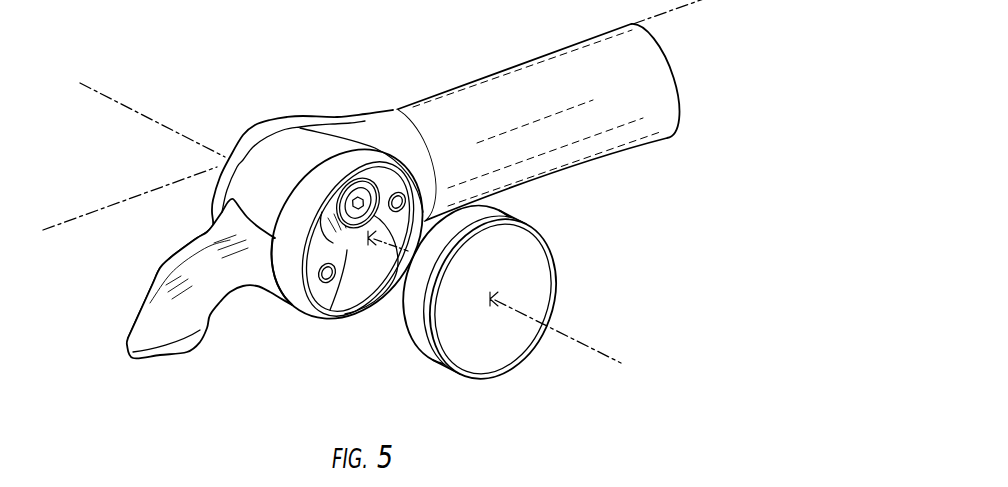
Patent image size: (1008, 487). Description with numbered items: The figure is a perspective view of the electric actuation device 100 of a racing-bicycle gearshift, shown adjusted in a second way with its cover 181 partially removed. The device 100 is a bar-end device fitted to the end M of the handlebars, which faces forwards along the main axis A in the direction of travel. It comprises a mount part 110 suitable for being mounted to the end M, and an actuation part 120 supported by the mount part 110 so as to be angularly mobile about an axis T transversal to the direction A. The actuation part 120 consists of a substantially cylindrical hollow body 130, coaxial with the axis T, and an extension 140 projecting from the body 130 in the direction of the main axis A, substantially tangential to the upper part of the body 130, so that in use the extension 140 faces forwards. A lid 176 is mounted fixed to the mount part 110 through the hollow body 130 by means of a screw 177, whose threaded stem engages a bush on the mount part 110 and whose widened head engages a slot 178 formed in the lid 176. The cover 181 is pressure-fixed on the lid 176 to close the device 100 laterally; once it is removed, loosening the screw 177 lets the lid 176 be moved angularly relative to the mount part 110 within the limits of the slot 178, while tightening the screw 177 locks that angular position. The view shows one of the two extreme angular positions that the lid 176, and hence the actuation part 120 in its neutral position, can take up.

The electric actuation device 100 is at (377, 199).
The mount part 110 is at (262, 131).
The actuation part 120 is at (190, 225).
The hollow body 130 is at (263, 173).
The extension 140 is at (172, 262).
The lid 176 is at (347, 300).
The screw 177 is at (398, 292).
The slot 178 is at (362, 224).
The cover 181 is at (543, 278).
The end of handlebars M is at (528, 73).
The main axis A is at (53, 227).
The axis T is at (608, 357).